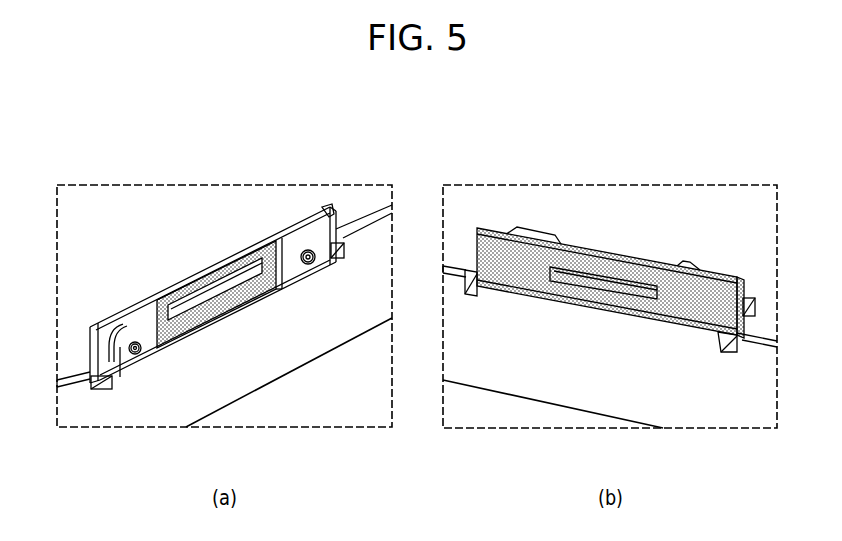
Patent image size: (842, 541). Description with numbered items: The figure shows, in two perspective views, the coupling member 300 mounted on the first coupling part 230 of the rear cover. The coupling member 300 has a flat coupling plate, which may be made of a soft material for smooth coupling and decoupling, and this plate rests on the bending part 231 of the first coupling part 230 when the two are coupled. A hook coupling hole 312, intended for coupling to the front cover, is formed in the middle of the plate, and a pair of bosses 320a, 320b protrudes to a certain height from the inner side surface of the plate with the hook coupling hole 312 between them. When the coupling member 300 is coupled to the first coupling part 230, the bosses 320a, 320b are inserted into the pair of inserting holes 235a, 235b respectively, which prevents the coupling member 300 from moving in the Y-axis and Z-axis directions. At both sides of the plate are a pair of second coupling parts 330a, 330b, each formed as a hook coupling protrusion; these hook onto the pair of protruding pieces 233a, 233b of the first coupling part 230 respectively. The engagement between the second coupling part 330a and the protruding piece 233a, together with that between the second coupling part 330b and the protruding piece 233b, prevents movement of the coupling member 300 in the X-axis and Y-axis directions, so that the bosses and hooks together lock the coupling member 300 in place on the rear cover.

The first coupling part 230 is at (235, 346).
The bending part 231 is at (690, 333).
The protruding piece 233a is at (308, 238).
The protruding piece 233b is at (103, 330).
The inserting hole 235a is at (299, 265).
The inserting hole 235b is at (129, 356).
The coupling member 300 is at (147, 280).
The hook coupling hole 312 is at (207, 294).
The boss 320a is at (316, 266).
The boss 320b is at (137, 353).
The second coupling part 330a is at (340, 243).
The second coupling part 330b is at (93, 378).